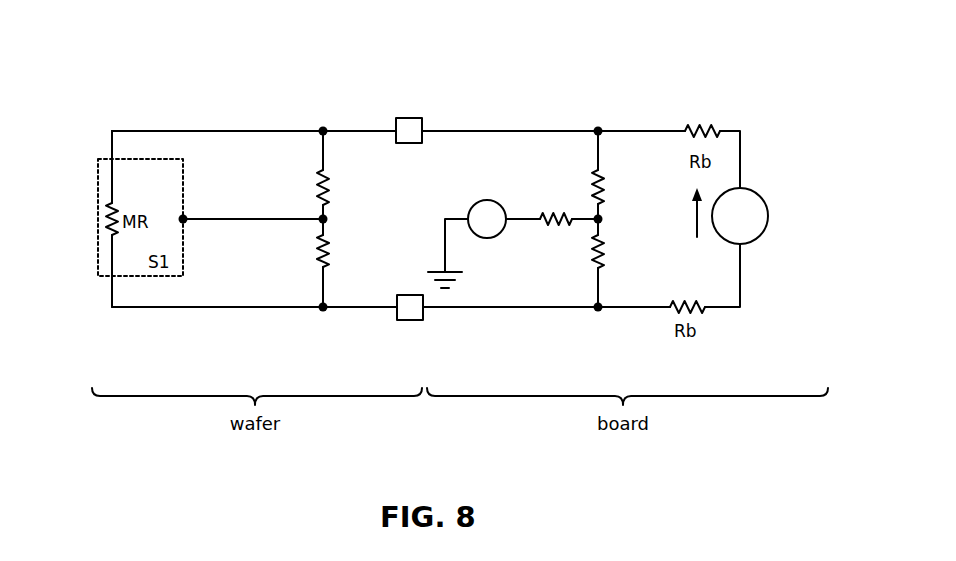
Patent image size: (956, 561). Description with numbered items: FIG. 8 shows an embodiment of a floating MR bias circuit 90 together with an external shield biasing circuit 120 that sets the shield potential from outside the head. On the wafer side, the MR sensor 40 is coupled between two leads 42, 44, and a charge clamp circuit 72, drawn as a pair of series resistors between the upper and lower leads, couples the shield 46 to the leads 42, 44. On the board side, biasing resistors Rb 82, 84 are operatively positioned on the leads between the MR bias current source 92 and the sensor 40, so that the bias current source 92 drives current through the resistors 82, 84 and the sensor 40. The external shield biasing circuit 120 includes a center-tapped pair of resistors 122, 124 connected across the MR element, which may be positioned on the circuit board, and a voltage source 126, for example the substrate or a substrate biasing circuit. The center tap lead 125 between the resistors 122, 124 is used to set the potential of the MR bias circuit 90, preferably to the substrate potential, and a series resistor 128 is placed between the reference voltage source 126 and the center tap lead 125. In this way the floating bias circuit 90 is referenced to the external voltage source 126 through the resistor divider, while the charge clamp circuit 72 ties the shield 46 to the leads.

The floating MR bias circuit 90 is at (100, 88).
The lead 44 is at (212, 131).
The lead 42 is at (352, 308).
The sensor 40 is at (102, 220).
The shield 46 is at (157, 278).
The charge clamp circuit 72 is at (346, 211).
The external shield biasing circuit 120 is at (544, 155).
The voltage source 126 is at (476, 201).
The series resistor 128 is at (553, 228).
The center tap lead 125 is at (586, 224).
The resistor 122 is at (606, 185).
The resistor 124 is at (606, 251).
The biasing resistor 82 is at (702, 125).
The biasing resistor 84 is at (683, 303).
The MR bias current source 92 is at (768, 216).